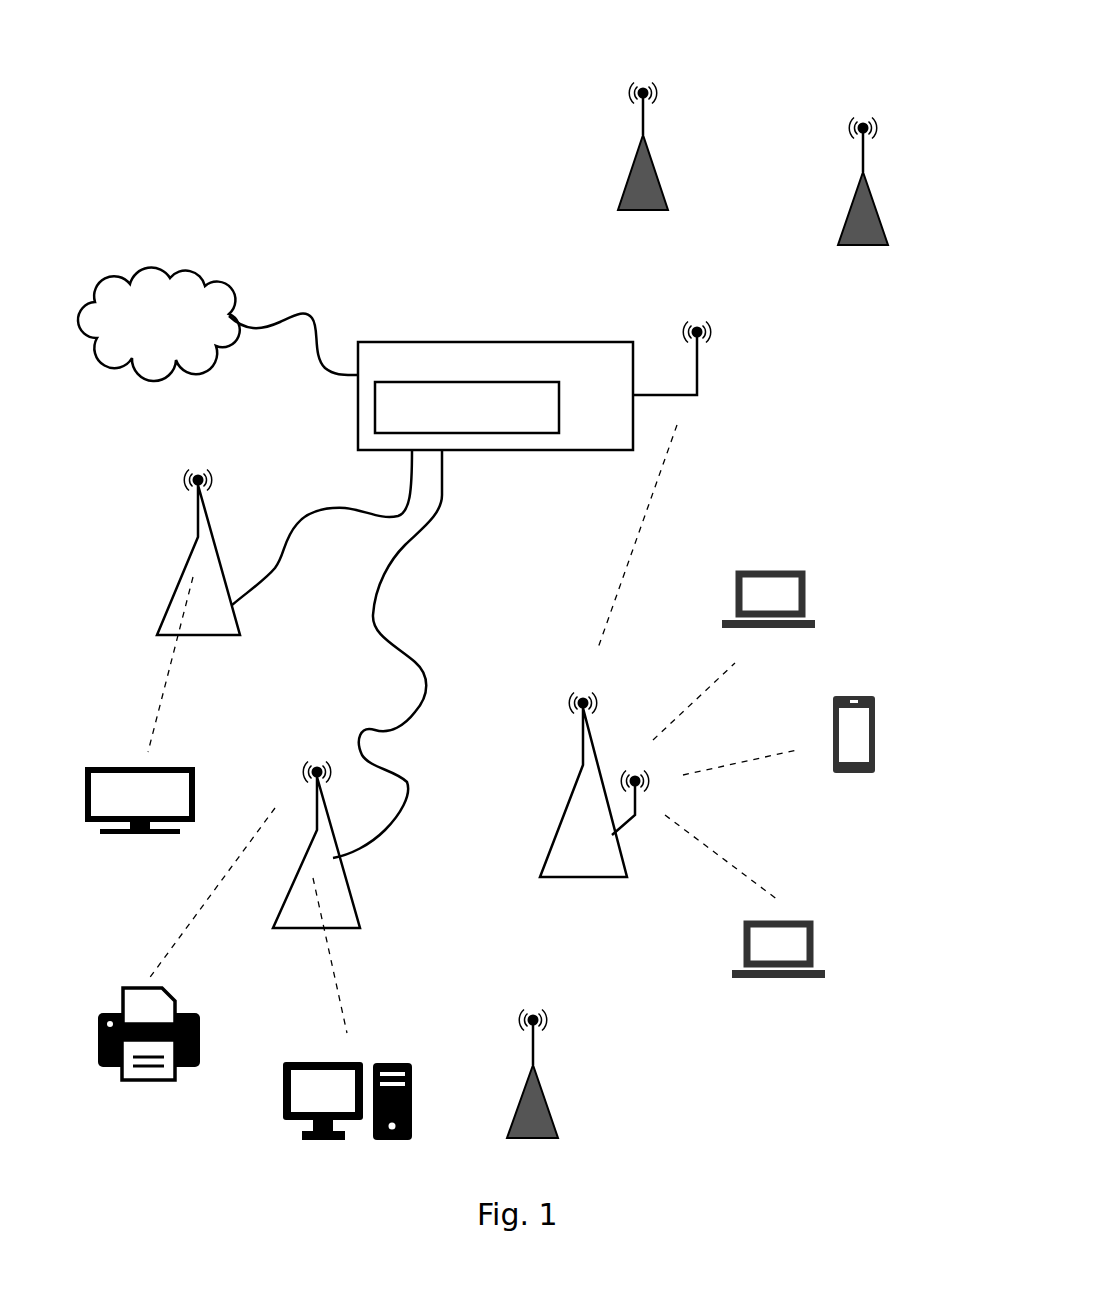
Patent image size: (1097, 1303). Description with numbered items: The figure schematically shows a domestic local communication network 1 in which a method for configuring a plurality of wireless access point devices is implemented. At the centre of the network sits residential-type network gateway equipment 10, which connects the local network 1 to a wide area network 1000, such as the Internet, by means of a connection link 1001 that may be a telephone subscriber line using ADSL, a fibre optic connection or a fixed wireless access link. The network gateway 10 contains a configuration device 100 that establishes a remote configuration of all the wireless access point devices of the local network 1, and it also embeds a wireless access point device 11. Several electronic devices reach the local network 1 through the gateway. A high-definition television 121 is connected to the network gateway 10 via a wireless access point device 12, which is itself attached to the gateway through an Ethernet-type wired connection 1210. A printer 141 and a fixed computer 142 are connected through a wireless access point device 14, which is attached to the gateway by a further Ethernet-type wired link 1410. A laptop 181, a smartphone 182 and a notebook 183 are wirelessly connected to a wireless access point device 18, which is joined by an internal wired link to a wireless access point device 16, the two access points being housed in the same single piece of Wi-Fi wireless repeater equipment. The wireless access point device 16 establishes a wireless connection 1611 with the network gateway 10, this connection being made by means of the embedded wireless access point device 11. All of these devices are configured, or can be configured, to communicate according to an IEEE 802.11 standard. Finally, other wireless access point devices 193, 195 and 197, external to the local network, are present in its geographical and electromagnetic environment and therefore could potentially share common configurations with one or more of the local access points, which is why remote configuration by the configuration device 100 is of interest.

The local communication network 1 is at (385, 124).
The wide area network 1000 is at (243, 250).
The connection link 1001 is at (318, 320).
The network gateway 10 is at (455, 350).
The configuration device 100 is at (553, 412).
The wireless access point device 11 is at (715, 292).
The wireless access point device 12 is at (162, 470).
The wired connection 1210 is at (316, 506).
The wired link 1410 is at (380, 603).
The wireless access point device 14 is at (314, 745).
The wireless access point device 16 is at (563, 675).
The wireless connection 1611 is at (625, 560).
The wireless access point device 18 is at (660, 762).
The electronic device 121 is at (125, 752).
The electronic device 141 is at (118, 975).
The electronic device 142 is at (393, 1040).
The electronic device 181 is at (815, 572).
The electronic device 182 is at (885, 695).
The electronic device 183 is at (822, 943).
The wireless access point device 193 is at (535, 992).
The wireless access point device 195 is at (673, 88).
The wireless access point device 197 is at (888, 113).